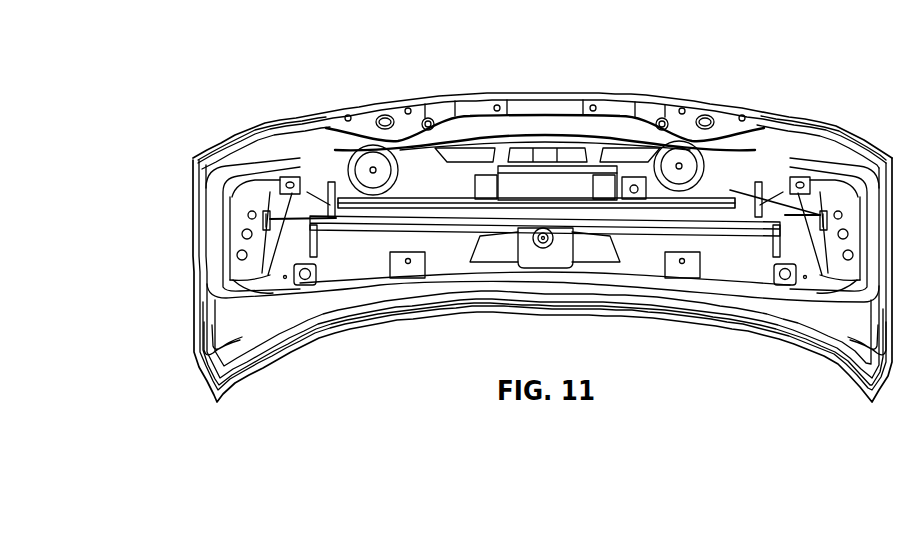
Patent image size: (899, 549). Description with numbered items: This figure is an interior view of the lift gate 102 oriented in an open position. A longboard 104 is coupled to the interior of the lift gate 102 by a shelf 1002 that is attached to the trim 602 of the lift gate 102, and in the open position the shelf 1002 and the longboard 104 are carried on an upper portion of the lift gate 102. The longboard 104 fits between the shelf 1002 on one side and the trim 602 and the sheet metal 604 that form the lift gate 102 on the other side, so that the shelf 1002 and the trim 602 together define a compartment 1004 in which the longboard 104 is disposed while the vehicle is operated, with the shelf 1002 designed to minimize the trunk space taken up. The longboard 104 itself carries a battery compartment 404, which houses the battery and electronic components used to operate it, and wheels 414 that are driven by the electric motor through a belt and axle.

The lift gate 102 is at (277, 75).
The longboard 104 is at (447, 197).
The battery compartment 404 is at (540, 182).
The wheels 414 is at (680, 163).
The trim 602 is at (212, 268).
The sheet metal 604 is at (384, 115).
The shelf 1002 is at (798, 188).
The compartment 1004 is at (729, 191).